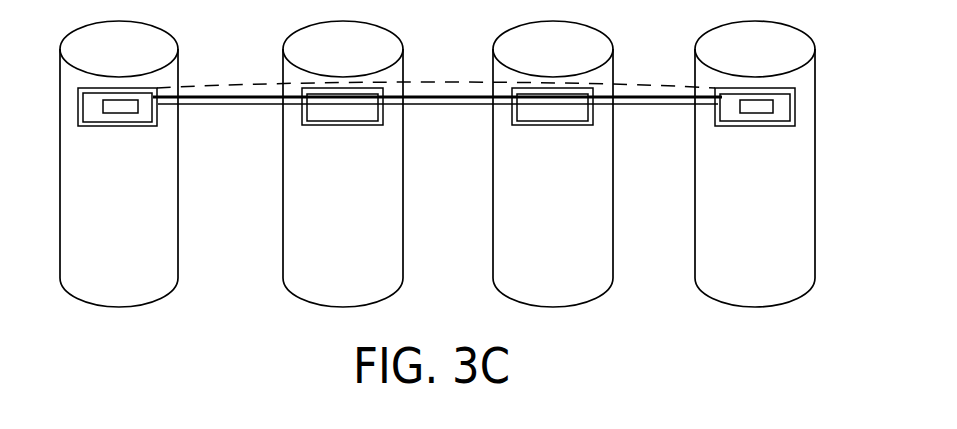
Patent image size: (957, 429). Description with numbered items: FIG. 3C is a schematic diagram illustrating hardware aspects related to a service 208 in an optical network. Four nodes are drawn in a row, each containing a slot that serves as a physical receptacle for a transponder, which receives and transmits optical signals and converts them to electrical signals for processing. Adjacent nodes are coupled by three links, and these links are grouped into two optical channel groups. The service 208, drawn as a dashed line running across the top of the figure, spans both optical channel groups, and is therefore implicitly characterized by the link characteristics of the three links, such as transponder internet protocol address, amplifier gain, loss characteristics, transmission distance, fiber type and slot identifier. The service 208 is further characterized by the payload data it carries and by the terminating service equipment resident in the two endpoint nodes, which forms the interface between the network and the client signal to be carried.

The service 208 is at (238, 83).